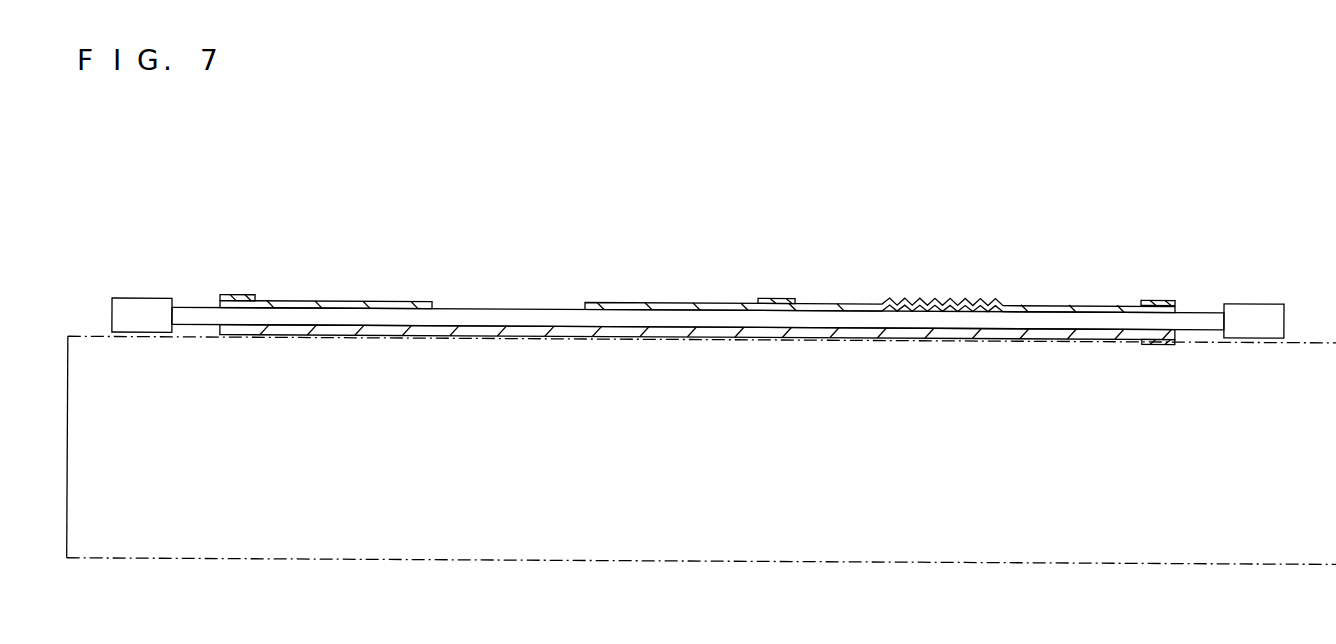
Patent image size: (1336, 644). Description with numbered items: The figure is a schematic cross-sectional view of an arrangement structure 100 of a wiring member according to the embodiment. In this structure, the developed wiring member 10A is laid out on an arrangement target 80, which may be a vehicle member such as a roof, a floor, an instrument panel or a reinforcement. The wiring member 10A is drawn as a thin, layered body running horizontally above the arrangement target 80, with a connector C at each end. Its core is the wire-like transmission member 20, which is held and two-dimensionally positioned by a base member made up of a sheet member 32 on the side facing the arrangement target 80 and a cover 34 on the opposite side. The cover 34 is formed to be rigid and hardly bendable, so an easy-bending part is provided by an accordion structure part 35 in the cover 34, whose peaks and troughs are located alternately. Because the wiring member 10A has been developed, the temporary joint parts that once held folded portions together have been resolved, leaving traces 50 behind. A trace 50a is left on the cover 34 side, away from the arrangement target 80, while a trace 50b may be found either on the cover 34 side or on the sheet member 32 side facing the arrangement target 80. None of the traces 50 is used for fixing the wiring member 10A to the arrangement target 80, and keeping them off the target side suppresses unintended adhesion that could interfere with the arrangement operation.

The arrangement structure of the wiring member 100 is at (1208, 126).
The arrangement target 80 is at (825, 562).
The connector C is at (142, 309).
The wiring member after development 10A is at (1061, 302).
The wire-like transmission member 20 is at (514, 318).
The sheet member 32 is at (455, 339).
The cover 34 is at (365, 300).
The accordion structure part 35 is at (952, 294).
The trace of the temporary joint part 50 is at (718, 320).
The trace of the temporary joint part 40a 50a is at (775, 296).
The trace of the temporary joint part 40b 50b is at (235, 293).